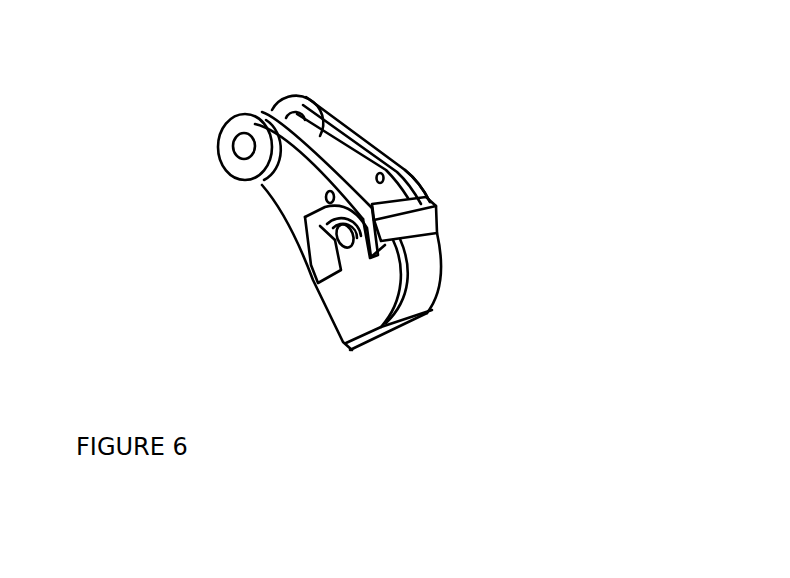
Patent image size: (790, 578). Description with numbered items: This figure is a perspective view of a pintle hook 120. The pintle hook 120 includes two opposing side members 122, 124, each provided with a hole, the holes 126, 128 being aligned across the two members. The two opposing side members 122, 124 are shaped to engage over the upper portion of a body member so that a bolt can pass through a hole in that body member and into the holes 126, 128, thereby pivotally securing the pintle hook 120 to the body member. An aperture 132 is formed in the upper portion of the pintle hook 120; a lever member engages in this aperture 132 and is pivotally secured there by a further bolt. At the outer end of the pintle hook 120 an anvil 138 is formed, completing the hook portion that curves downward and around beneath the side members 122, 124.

The pintle hook 120 is at (455, 273).
The side member 122 is at (293, 180).
The side member 124 is at (378, 143).
The hole 126 is at (243, 147).
The hole 128 is at (300, 112).
The aperture 132 is at (410, 178).
The anvil 138 is at (310, 320).